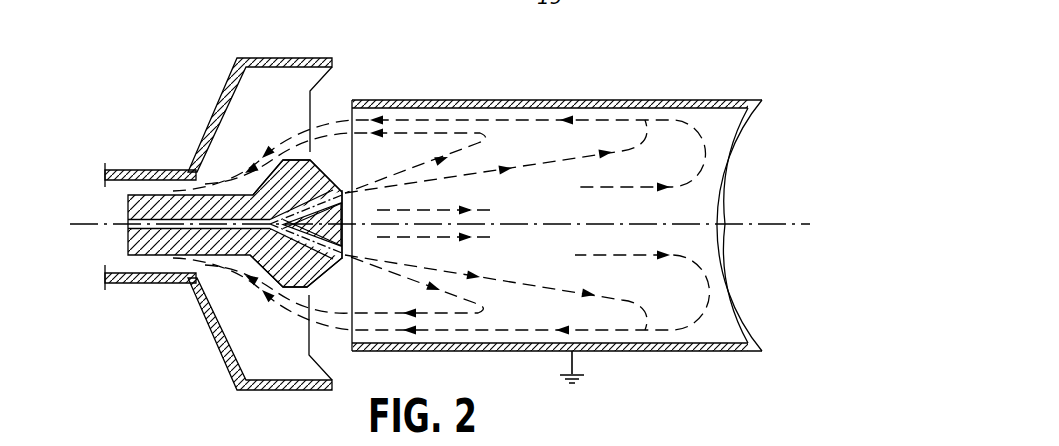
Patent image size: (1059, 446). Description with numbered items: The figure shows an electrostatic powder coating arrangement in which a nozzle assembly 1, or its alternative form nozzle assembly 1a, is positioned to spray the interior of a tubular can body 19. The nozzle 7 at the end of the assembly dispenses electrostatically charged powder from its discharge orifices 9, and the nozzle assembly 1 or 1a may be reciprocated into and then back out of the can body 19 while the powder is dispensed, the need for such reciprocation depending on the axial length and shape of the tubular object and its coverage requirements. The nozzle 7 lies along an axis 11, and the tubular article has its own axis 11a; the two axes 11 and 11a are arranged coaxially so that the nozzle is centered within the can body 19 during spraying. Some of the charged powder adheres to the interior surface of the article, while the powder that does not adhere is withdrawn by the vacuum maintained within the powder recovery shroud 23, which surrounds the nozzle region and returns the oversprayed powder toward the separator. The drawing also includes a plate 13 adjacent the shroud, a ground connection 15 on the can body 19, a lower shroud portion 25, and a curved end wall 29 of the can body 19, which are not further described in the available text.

The nozzle assembly 1 is at (222, 262).
The nozzle assembly 1a is at (137, 246).
The nozzle 7 is at (318, 175).
The discharge orifices 9 is at (348, 193).
The axis 11 is at (93, 219).
The axis 11a is at (541, 208).
The electrode plate 13 is at (180, 170).
The ground connection 15 is at (583, 385).
The can body 19 is at (618, 100).
The powder recovery shroud 23 is at (262, 50).
The lower electrode 25 is at (275, 391).
The curved end wall 29 is at (737, 187).